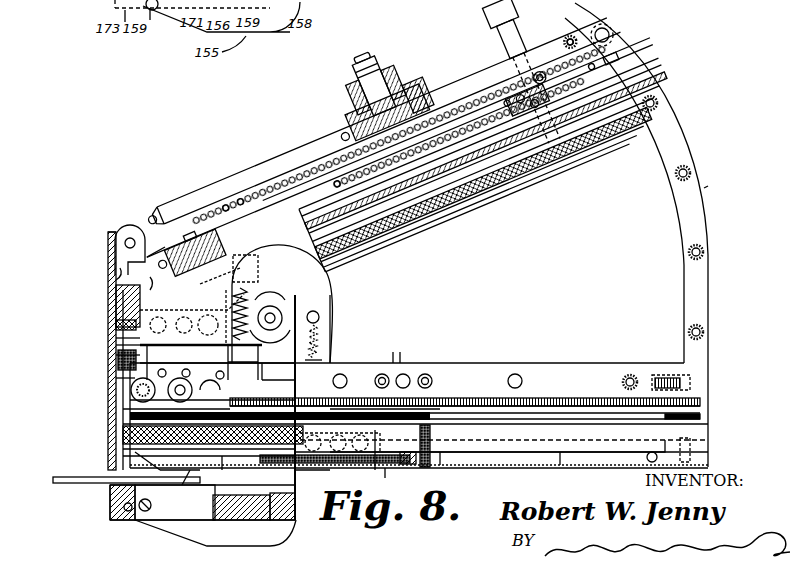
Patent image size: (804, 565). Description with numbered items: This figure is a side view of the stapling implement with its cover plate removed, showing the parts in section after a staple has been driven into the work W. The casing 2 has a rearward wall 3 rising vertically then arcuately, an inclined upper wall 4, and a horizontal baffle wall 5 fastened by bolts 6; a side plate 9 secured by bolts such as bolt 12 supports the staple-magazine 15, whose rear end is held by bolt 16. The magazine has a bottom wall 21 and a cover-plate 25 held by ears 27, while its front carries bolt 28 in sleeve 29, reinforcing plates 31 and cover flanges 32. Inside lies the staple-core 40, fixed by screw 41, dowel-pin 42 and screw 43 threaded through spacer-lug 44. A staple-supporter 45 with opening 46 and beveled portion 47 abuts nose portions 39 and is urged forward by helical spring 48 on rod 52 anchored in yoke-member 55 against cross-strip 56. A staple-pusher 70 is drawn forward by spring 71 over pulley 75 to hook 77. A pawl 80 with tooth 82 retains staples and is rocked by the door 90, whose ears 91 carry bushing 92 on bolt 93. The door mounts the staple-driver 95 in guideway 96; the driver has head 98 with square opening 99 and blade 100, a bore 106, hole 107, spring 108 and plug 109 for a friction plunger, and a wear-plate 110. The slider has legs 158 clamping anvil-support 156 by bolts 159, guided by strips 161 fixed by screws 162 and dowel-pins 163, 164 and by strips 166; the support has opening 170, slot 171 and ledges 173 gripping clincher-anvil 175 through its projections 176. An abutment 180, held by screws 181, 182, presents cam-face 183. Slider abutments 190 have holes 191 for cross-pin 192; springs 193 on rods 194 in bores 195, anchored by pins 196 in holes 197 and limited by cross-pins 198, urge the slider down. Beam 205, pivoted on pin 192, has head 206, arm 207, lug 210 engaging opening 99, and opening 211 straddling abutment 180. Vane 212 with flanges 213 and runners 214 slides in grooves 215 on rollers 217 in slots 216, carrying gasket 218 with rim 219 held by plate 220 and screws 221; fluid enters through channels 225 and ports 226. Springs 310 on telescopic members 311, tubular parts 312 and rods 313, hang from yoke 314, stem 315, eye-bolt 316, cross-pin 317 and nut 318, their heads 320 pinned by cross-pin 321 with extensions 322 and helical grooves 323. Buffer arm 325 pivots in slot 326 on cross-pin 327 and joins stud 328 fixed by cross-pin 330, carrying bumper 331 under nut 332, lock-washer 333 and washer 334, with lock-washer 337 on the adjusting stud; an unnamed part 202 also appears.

The casing 2 is at (709, 177).
The rearward wall 3 is at (665, 140).
The upper wall 4 is at (298, 157).
The horizontal wall 5 is at (605, 365).
The bolts 6 is at (690, 378).
The side plate 9 is at (643, 178).
The bolt 12 is at (573, 35).
The staple-magazine 15 is at (556, 399).
The bolt 16 is at (648, 460).
The bottom wall 21 is at (490, 468).
The cover-plate 25 is at (565, 412).
The ears 27 is at (702, 417).
The bolt 28 is at (128, 401).
The cylindrical sleeve 29 is at (160, 371).
The overlying plates 31 is at (210, 392).
The upstanding flanges 32 is at (183, 371).
The nose portions 39 is at (121, 452).
The staple-core 40 is at (536, 470).
The screw 41 is at (428, 470).
The dowel-pin 42 is at (692, 450).
The screw 43 is at (186, 480).
The spacer-lug 44 is at (180, 470).
The retractible staple-supporter 45 is at (150, 484).
The central rectangular opening 46 is at (222, 470).
The narrowed projecting portion 47 is at (121, 468).
The central helical spring 48 is at (322, 469).
The central rod 52 is at (350, 468).
The yoke-member 55 is at (378, 470).
The cross-strip 56 is at (422, 468).
The staple-pusher 70 is at (385, 436).
The helical spring 71 is at (496, 418).
The pulley 75 is at (215, 376).
The hook 77 is at (350, 410).
The pawl 80 is at (121, 412).
The tooth 82 is at (161, 390).
The door 90 is at (108, 304).
The spaced ears 91 is at (126, 230).
The sleeve or bushing 92 is at (112, 233).
The bolt 93 is at (125, 246).
The staple-driver 95 is at (112, 322).
The slotted guideway 96 is at (114, 279).
The enlarged rectangular head 98 is at (128, 305).
The square opening 99 is at (114, 345).
The blade 100 is at (121, 433).
The transverse bore 106 is at (112, 364).
The hole 107 is at (114, 378).
The helical spring 108 is at (201, 362).
The plug 109 is at (137, 380).
The wear-plate 110 is at (114, 354).
The anvil-support 156 is at (250, 520).
The legs 158 is at (284, 533).
The transverse bolts 159 is at (295, 490).
The guiding strips 161 is at (208, 314).
The screws 162 is at (192, 290).
The dowel-pin 163 is at (184, 329).
The dowel-pin 164 is at (217, 354).
The strips 166 is at (381, 487).
The re-entrant opening 170 is at (127, 514).
The central narrower slot 171 is at (208, 518).
The shouldered ledges 173 is at (104, 524).
The clincher-anvil 175 is at (108, 512).
The projections 176 is at (108, 500).
The upright abutment 180 is at (326, 303).
The screws 181 is at (324, 355).
The screws 182 is at (320, 318).
The cam-face 183 is at (326, 335).
The square abutments 190 is at (272, 369).
The transverse holes 191 is at (272, 302).
The cross-pin 192 is at (269, 312).
The helical springs 193 is at (262, 278).
The rods 194 is at (277, 379).
The vertical bores 195 is at (232, 290).
The projecting pins 196 is at (252, 262).
The holes 197 is at (246, 261).
The cross-pins 198 is at (230, 362).
The rail 202 is at (445, 160).
The beam 205 is at (362, 176).
The enlarged head 206 is at (180, 241).
The tapering arm 207 is at (445, 157).
The lug 210 is at (114, 338).
The upwardly extending opening 211 is at (300, 252).
The vane 212 is at (620, 70).
The upstanding flanges 213 is at (610, 94).
The runners 214 is at (604, 96).
The grooves 215 is at (500, 160).
The transverse slots 216 is at (430, 195).
The rollers 217 is at (420, 210).
The resilient gasket 218 is at (480, 212).
The beveled rim 219 is at (452, 230).
The thinner plate 220 is at (430, 246).
The screws 221 is at (578, 146).
The channels 225 is at (440, 389).
The ports 226 is at (410, 362).
The springs 310 is at (402, 170).
The telescopic members 311 is at (321, 175).
The tubular part 312 is at (314, 193).
The rod 313 is at (496, 128).
The yoke 314 is at (535, 100).
The knurled stem 315 is at (497, 118).
The eye-bolt 316 is at (554, 73).
The cross-pin 317 is at (552, 64).
The nut 318 is at (556, 40).
The head 320 is at (178, 270).
The cross-pin 321 is at (152, 290).
The cylindrical extension 322 is at (194, 262).
The helical grooves 323 is at (196, 236).
The arm 325 is at (455, 70).
The slot 326 is at (614, 39).
The cross-pin 327 is at (609, 33).
The stud 328 is at (352, 62).
The cross-pin 330 is at (400, 90).
The bumper 331 is at (390, 84).
The nut 332 is at (352, 70).
The lock-washer 333 is at (350, 81).
The second washer 334 is at (356, 94).
The lock-washer 337 is at (500, 18).
The work W is at (56, 478).